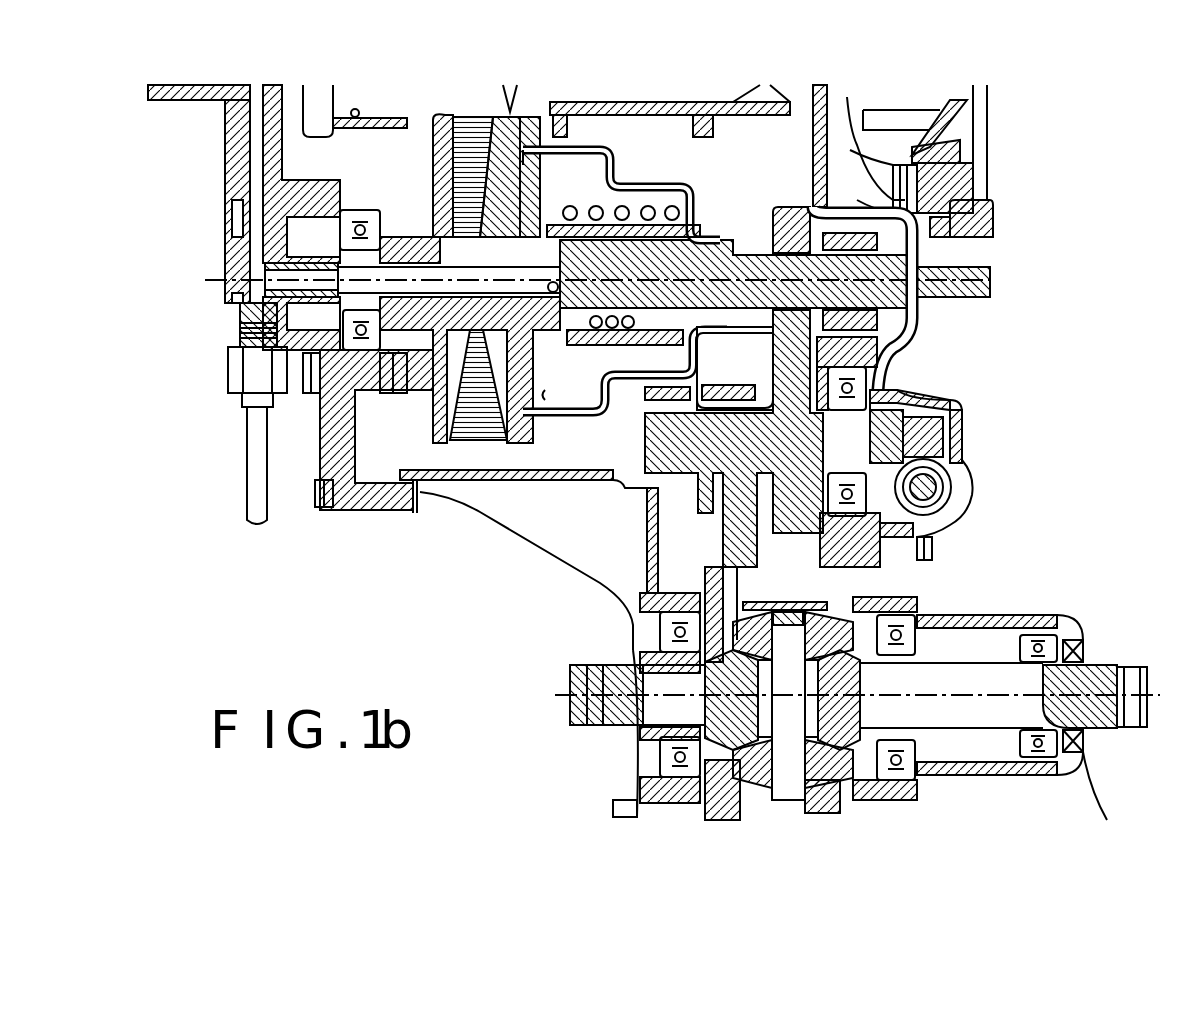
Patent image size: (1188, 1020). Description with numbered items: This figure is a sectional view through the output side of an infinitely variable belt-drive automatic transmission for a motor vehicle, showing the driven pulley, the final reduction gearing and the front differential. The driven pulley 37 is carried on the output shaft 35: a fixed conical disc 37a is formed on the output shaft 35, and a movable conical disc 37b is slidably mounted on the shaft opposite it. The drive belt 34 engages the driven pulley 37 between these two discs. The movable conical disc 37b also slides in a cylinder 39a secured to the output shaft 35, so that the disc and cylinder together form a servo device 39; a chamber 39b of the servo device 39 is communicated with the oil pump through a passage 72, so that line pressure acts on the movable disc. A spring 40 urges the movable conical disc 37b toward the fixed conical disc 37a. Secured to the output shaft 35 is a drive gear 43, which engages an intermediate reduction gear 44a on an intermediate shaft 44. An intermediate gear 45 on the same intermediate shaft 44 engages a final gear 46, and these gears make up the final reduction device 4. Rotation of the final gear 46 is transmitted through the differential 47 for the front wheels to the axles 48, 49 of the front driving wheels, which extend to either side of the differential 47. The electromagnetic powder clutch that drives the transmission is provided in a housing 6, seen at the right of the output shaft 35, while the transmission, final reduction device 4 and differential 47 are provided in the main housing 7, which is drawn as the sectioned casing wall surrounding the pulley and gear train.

The passage 72 is at (250, 223).
The fixed conical disc 37a is at (437, 150).
The servo device 39 is at (624, 164).
The spring 40 is at (634, 207).
The output shaft 35 is at (745, 265).
The drive gear 43 is at (788, 205).
The housing 6 is at (920, 322).
The intermediate reduction gear 44a is at (766, 366).
The intermediate gear 45 is at (733, 393).
The intermediate shaft 44 is at (782, 469).
The chamber 39b is at (575, 392).
The cylinder 39a is at (628, 430).
The movable conical disc 37b is at (515, 440).
The driven pulley 37 is at (420, 414).
The drive belt 34 is at (485, 470).
The main housing 7 is at (650, 538).
The final gear 46 is at (712, 573).
The axle 48 is at (610, 677).
The differential 47 is at (820, 787).
The final reduction device 4 is at (965, 652).
The axle 49 is at (1135, 647).